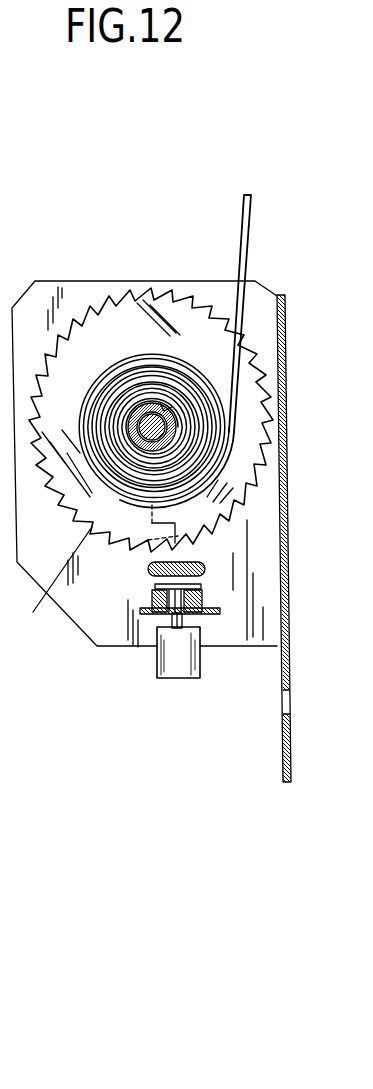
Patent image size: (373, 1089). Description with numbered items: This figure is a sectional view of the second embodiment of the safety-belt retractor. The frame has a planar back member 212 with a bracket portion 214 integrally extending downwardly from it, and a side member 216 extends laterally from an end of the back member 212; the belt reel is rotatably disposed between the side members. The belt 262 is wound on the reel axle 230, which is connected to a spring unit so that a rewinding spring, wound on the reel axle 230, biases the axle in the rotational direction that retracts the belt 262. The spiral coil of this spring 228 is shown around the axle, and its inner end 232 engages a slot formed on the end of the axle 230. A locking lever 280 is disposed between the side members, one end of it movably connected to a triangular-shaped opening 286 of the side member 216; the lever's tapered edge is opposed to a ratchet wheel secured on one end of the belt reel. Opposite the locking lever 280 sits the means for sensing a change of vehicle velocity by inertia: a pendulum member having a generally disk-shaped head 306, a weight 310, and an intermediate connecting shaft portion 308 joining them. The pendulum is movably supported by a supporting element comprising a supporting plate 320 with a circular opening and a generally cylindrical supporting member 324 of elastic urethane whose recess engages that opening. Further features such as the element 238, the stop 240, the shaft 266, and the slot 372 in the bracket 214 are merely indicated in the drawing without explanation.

The planar back member 212 is at (285, 433).
The bracket portion 214 is at (290, 667).
The side member 216 is at (92, 297).
The spiral spring 228 is at (167, 407).
The reel axle 230 is at (167, 432).
The inner end of spring 232 is at (160, 405).
The spring arm 238 is at (54, 582).
The stop 240 is at (97, 553).
The belt 262 is at (250, 236).
The shaft 266 is at (167, 432).
The locking lever 280 is at (200, 563).
The triangular-shaped opening 286 is at (153, 560).
The head 306 is at (201, 586).
The intermediate connecting shaft portion 308 is at (175, 617).
The weight 310 is at (190, 662).
The supporting plate 320 is at (200, 614).
The supporting member 324 is at (203, 601).
The slot 372 is at (283, 700).